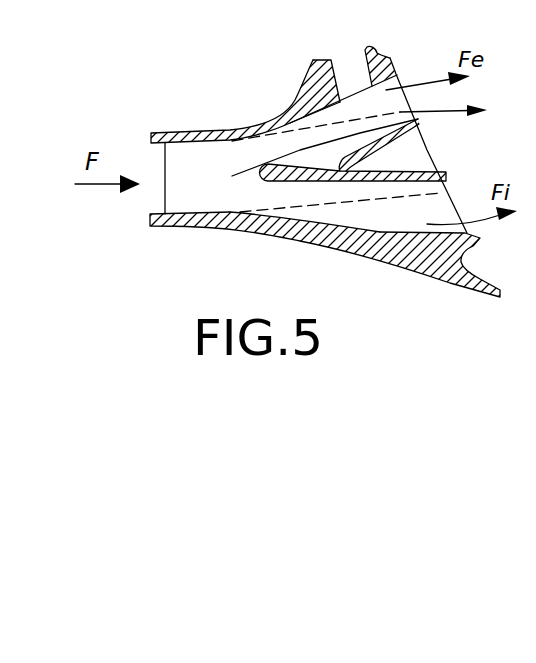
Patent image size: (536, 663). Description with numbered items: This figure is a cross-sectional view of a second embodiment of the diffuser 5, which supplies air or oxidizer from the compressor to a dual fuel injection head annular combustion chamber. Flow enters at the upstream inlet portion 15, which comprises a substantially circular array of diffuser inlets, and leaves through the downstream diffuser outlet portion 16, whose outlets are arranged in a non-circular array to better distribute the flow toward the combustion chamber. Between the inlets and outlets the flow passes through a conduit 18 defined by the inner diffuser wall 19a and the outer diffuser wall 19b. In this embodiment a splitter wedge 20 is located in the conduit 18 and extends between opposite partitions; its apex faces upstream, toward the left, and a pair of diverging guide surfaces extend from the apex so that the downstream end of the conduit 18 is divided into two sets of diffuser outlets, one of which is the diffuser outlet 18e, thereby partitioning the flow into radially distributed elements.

The diffuser 5 is at (150, 165).
The inlet portion 15 is at (172, 126).
The diffuser outlet portion 16 is at (369, 268).
The conduit 18 is at (456, 228).
The diffuser outlet 18e is at (400, 84).
The inner diffuser wall 19a is at (332, 234).
The outer diffuser wall 19b is at (245, 128).
The splitter wedge 20 is at (397, 128).